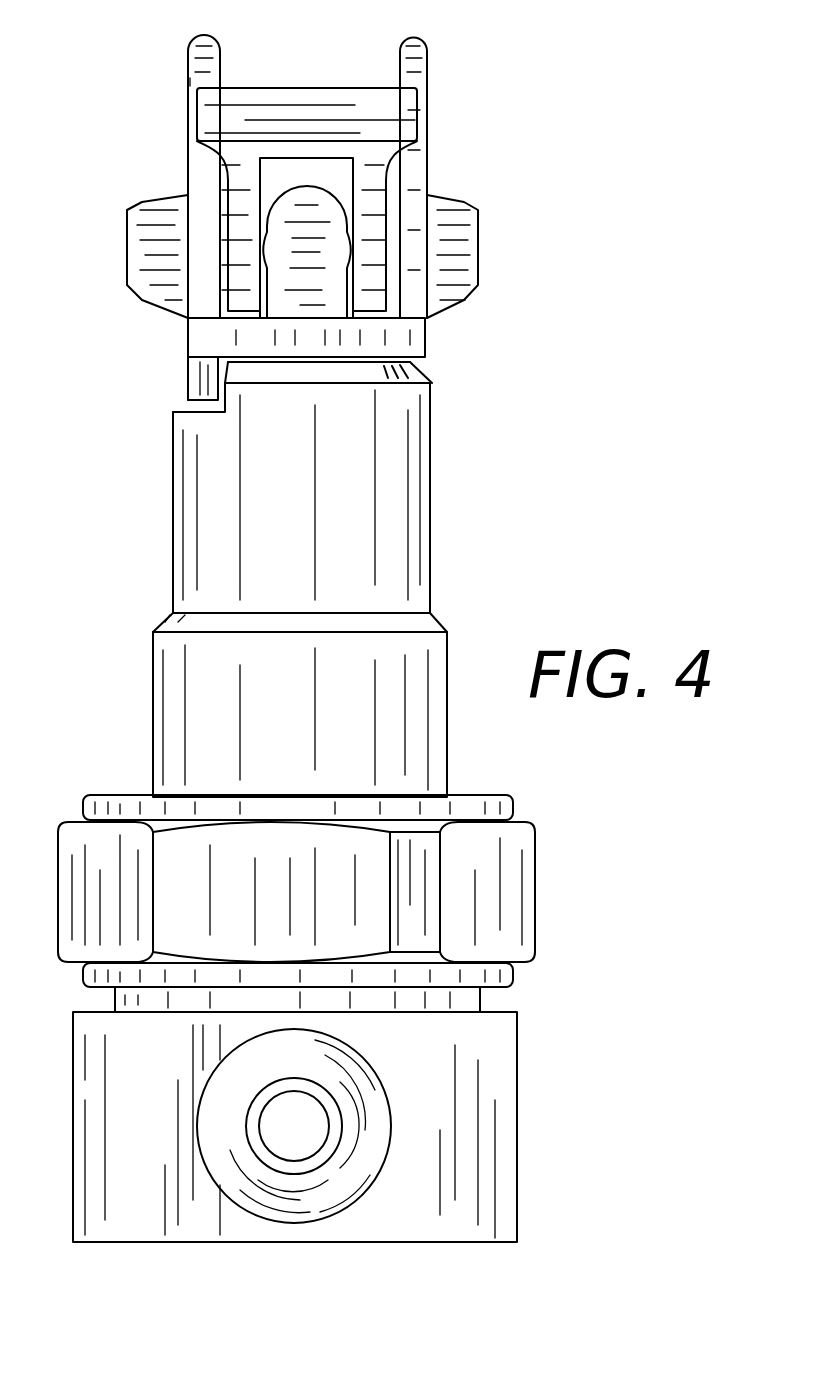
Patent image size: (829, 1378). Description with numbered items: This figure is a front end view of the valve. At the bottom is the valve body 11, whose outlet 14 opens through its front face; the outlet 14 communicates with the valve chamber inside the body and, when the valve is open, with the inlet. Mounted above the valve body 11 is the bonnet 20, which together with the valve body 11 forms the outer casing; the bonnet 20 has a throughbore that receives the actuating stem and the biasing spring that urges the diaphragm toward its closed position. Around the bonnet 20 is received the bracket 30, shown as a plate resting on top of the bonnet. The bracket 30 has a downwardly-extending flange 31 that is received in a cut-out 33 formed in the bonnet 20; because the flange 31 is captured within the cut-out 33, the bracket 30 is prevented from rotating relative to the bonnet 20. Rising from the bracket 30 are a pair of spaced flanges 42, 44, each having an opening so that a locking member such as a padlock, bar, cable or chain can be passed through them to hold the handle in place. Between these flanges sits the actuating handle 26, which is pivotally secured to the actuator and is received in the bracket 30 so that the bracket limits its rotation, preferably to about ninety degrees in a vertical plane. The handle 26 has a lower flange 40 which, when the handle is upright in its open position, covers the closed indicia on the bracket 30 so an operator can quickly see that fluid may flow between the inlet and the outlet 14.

The valve body 11 is at (410, 1208).
The outlet 14 is at (245, 1158).
The bonnet 20 is at (220, 687).
The actuating handle 26 is at (470, 210).
The bracket 30 is at (417, 338).
The downwardly-extending flange 31 is at (195, 363).
The cut-out 33 is at (175, 412).
The lower flange 40 is at (310, 97).
The spaced flange 42 is at (195, 65).
The spaced flange 44 is at (427, 65).